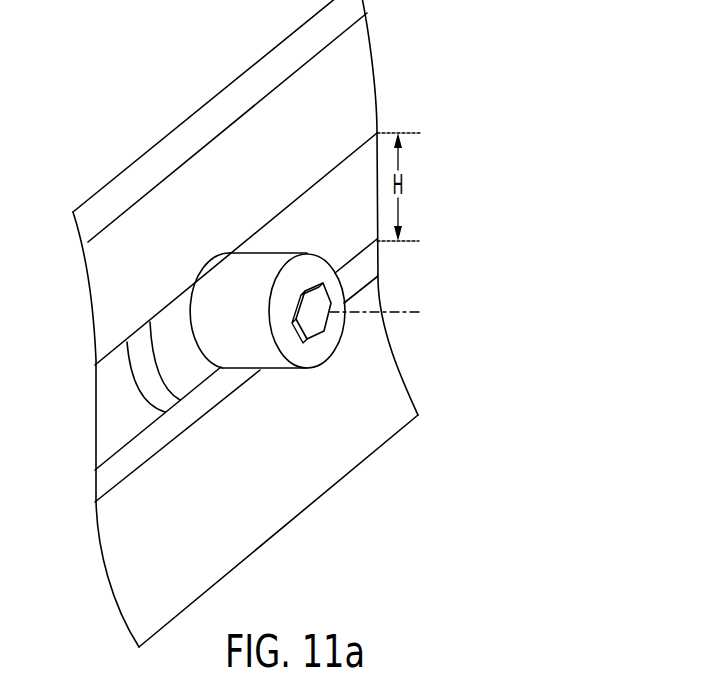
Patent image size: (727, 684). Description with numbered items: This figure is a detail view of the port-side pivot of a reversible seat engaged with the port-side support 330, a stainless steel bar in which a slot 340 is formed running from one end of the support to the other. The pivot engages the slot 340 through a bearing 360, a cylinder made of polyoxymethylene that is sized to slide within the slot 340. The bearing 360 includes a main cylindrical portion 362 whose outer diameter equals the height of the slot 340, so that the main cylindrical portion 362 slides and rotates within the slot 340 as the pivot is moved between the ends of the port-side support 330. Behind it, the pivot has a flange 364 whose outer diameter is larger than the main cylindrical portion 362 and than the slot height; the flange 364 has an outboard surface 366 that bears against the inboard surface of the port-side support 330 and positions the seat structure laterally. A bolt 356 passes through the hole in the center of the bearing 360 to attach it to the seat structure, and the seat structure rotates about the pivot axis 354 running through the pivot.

The port-side support 330 is at (115, 306).
The slot 340 is at (123, 413).
The pivot axis 354 is at (418, 312).
The bolt 356 is at (322, 294).
The bearing 360 is at (257, 273).
The main cylindrical portion 362 is at (270, 355).
The flange 364 is at (163, 398).
The outboard surface 366 is at (170, 327).